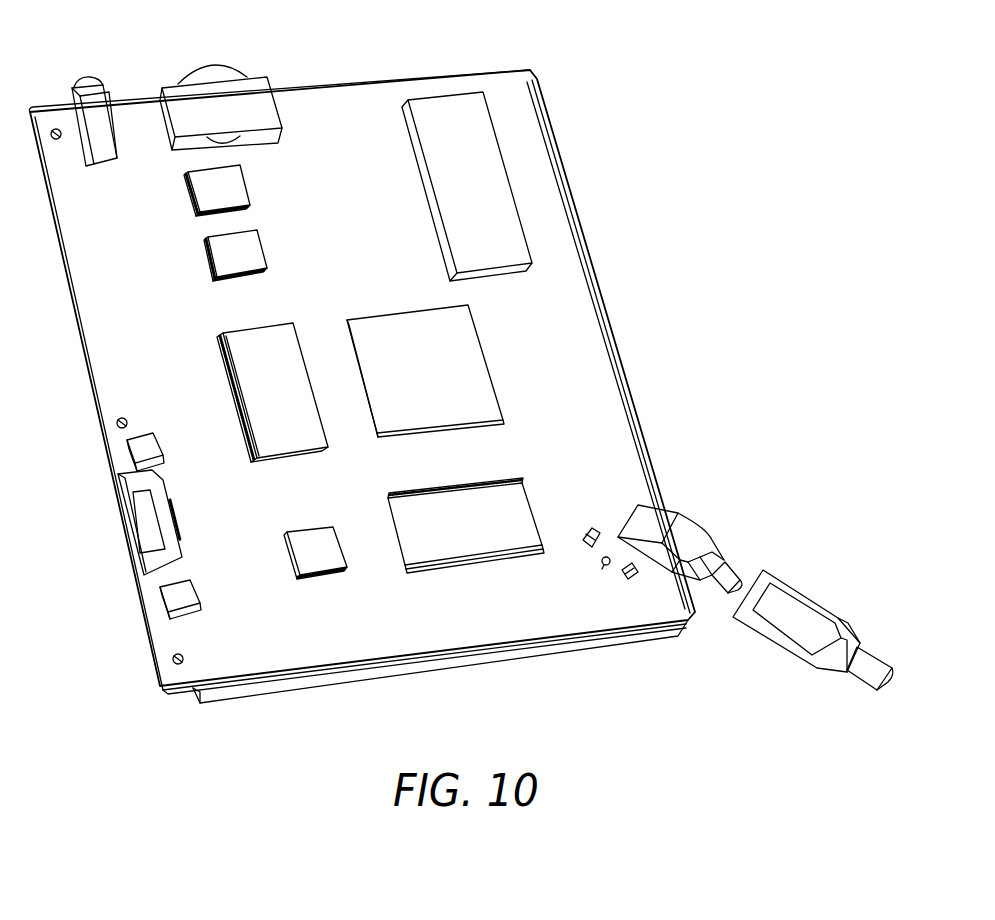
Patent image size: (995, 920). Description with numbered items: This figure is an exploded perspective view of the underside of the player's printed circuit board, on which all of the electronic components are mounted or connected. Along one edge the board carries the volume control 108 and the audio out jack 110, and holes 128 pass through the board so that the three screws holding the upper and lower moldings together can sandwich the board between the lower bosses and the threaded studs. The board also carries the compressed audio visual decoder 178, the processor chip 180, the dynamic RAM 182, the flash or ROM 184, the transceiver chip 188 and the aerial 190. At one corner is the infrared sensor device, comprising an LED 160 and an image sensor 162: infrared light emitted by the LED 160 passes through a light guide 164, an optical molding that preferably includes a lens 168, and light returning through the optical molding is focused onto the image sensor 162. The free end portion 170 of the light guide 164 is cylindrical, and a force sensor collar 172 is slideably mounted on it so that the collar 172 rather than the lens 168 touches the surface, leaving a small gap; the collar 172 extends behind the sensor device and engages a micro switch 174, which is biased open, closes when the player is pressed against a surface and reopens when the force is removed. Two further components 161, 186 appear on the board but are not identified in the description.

The volume control 108 is at (220, 90).
The audio out jack 110 is at (100, 100).
The holes 128 is at (58, 128).
The LED 160 is at (443, 665).
The LED 161 is at (607, 570).
The image sensor 162 is at (633, 575).
The light guide 164 is at (678, 530).
The lens 168 is at (747, 580).
The free end portion 170 is at (730, 563).
The force sensor collar 172 is at (807, 603).
The micro switch 174 is at (598, 527).
The compressed audio visual decoder 178 is at (313, 565).
The processor chip 180 is at (477, 380).
The dynamic RAM 182 is at (247, 365).
The flash or ROM 184 is at (208, 188).
The battery 186 is at (490, 162).
The transceiver chip 188 is at (227, 258).
The aerial 190 is at (590, 242).